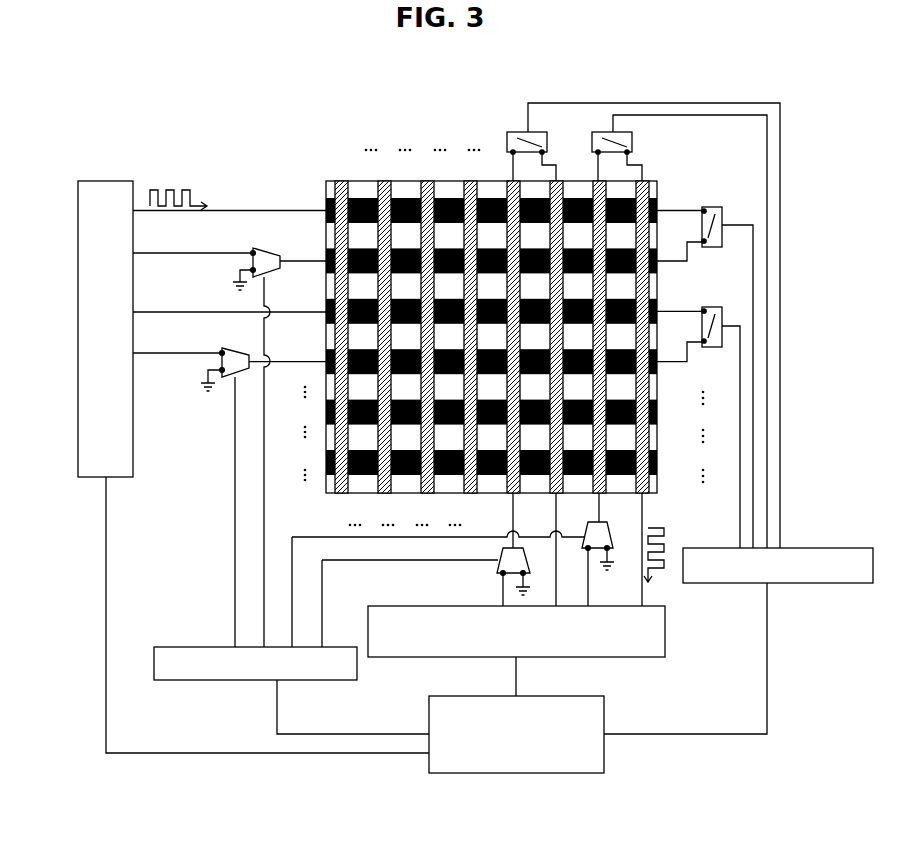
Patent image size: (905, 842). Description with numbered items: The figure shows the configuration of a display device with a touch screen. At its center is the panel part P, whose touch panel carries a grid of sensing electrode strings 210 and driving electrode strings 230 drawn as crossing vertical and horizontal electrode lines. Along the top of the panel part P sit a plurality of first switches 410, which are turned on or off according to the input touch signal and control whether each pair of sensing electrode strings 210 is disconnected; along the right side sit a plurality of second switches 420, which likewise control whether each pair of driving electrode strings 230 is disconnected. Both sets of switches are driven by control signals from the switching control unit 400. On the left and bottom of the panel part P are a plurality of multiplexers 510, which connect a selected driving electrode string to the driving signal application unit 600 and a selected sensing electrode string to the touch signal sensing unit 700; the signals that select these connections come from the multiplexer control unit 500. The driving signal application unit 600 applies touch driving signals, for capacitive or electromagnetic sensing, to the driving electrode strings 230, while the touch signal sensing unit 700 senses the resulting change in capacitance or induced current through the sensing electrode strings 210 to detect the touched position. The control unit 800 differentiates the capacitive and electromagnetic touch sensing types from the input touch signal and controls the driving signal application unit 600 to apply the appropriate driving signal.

The panel part P is at (358, 180).
The sensing electrode strings 210 is at (330, 183).
The driving electrode strings 230 is at (328, 201).
The switching control unit 400 is at (806, 547).
The first switches 410 is at (516, 128).
The second switches 420 is at (722, 212).
The multiplexer control unit 500 is at (198, 646).
The multiplexers 510 is at (258, 247).
The driving signal application unit 600 is at (78, 328).
The touch signal sensing unit 700 is at (665, 628).
The control unit 800 is at (604, 706).